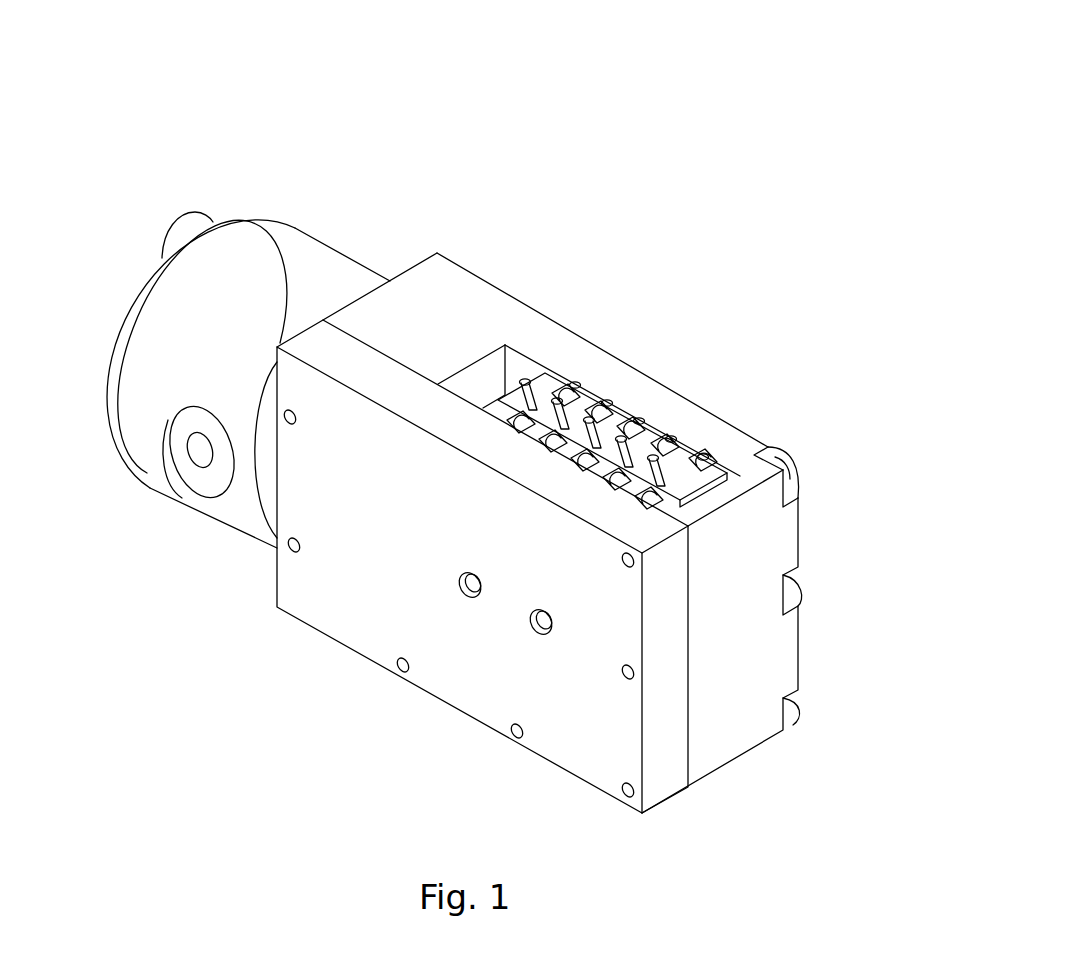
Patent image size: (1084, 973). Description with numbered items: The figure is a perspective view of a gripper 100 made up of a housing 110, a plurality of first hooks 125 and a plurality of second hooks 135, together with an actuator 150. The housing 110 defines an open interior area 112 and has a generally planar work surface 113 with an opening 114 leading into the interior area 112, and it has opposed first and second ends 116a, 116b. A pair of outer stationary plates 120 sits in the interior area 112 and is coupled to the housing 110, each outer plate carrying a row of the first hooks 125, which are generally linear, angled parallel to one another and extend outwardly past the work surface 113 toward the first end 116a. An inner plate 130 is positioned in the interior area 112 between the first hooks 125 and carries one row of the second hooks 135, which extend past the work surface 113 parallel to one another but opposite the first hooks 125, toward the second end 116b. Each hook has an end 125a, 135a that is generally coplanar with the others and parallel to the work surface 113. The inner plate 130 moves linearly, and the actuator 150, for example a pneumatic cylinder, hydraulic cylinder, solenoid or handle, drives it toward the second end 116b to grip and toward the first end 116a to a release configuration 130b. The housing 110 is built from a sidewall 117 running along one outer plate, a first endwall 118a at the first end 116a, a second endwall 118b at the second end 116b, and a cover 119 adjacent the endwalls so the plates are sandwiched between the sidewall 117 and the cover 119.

The gripper 100 is at (602, 89).
The actuator 150 is at (253, 240).
The housing 110 is at (418, 250).
The interior area 112 is at (489, 360).
The work surface 113 is at (519, 322).
The opening 114 is at (527, 381).
The first end 116a is at (784, 431).
The second end 116b is at (458, 252).
The sidewall 117 is at (698, 428).
The first endwall 118a is at (750, 468).
The second endwall 118b is at (410, 288).
The cover 119 is at (325, 605).
The outer stationary plates 120 is at (706, 456).
The first hooks 125 is at (590, 453).
The end of first hook 125a is at (700, 411).
The inner plate 130 is at (570, 454).
The release configuration 130b is at (705, 498).
The second hooks 135 is at (703, 456).
The end of second hook 135a is at (524, 383).